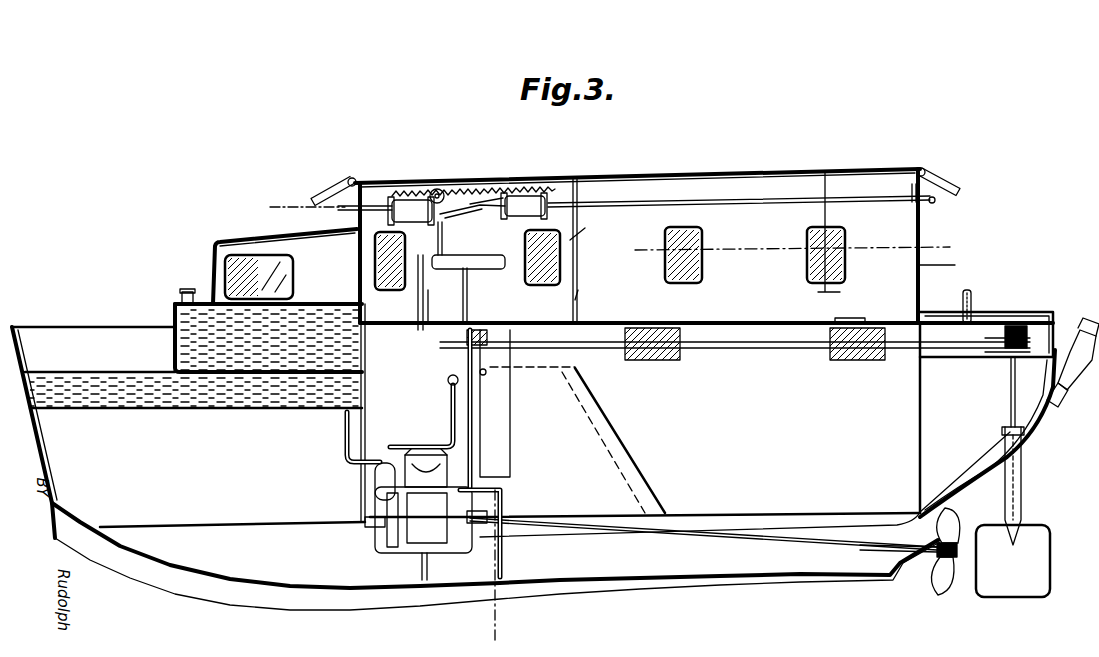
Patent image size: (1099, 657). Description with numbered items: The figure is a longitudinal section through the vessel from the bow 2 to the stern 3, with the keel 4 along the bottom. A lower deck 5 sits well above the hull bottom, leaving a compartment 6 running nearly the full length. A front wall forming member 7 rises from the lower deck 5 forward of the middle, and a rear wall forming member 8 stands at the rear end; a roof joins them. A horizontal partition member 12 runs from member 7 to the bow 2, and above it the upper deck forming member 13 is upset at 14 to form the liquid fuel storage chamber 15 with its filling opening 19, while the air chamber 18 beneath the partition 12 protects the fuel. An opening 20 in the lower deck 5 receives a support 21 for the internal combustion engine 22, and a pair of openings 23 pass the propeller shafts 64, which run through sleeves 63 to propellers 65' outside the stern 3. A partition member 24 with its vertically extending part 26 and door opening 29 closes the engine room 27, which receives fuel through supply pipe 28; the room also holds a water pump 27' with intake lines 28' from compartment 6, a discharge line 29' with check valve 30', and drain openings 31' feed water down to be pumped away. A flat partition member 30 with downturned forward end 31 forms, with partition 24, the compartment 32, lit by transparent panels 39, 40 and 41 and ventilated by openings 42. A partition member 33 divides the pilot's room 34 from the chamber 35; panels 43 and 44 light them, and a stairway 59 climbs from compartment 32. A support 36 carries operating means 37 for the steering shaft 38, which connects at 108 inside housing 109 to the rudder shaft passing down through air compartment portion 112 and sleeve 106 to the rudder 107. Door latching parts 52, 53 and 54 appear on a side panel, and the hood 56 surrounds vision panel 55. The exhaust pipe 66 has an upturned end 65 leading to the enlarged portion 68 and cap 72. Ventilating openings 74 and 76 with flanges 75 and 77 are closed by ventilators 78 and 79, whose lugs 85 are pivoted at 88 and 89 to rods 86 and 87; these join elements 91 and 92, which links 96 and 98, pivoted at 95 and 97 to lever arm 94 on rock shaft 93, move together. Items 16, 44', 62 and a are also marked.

The bow 2 is at (22, 335).
The stern 3 is at (1010, 395).
The keel 4 is at (284, 606).
The lower deck 5 is at (770, 513).
The compartment 6 is at (825, 172).
The front wall forming member 7 is at (345, 492).
The rear wall forming member 8 is at (932, 417).
The partition member 12 is at (242, 410).
The upper deck forming member 13 is at (960, 320).
The upset portion 14 is at (176, 305).
The liquid fuel storage chamber 15 is at (160, 398).
The bracket 16 is at (466, 337).
The air chamber 18 is at (189, 473).
The filling opening 19 is at (195, 292).
The opening 20 is at (368, 528).
The support 21 is at (424, 582).
The internal combustion engine 22 is at (500, 493).
The openings 23 is at (570, 512).
The partition member 24 is at (453, 408).
The vertically extending part 26 is at (444, 384).
The engine room 27 is at (422, 365).
The water pump 27' is at (357, 488).
The fuel supply pipe 28 is at (326, 432).
The water intake lines 28' is at (493, 563).
The door opening 29 is at (465, 422).
The water discharge line 29' is at (487, 408).
The partition member 30 is at (706, 308).
The check valve 30' is at (487, 390).
The downturned forward end 31 is at (487, 375).
The drain openings 31' is at (232, 538).
The compartment 32 is at (719, 395).
The partition member 33 is at (468, 226).
The pilot's room 34 is at (519, 225).
The chamber 35 is at (745, 176).
The support 36 is at (360, 300).
The operating means 37 is at (270, 278).
The steering shaft 38 is at (768, 348).
The transparent panel 39 is at (665, 360).
The transparent panel 40 is at (862, 358).
The transparent panel 41 is at (852, 318).
The openings 42 is at (900, 320).
The transparent panels 43 is at (396, 196).
The transparent panels 44 is at (770, 217).
The shelf 44' is at (947, 263).
The latching member 52 is at (445, 254).
The stop 53 is at (525, 270).
The clamping cap 54 is at (470, 268).
The transparent panel 55 is at (358, 248).
The hood 56 is at (238, 242).
The stairway 59 is at (612, 428).
The link 62 is at (580, 292).
The sleeves 63 is at (922, 565).
The propeller shafts 64 is at (845, 560).
The upturned rear end 65 is at (327, 174).
The propeller 65' is at (969, 484).
The exhaust pipe 66 is at (582, 540).
The enlarged upper portion 68 is at (1077, 345).
The cap 72 is at (1090, 320).
The ventilating opening 74 is at (351, 178).
The flange 75 is at (356, 180).
The ventilating opening 76 is at (910, 188).
The flange 77 is at (925, 172).
The ventilator 78 is at (320, 192).
The ventilator 79 is at (950, 182).
The lug 85 is at (936, 201).
The rod 86 is at (370, 200).
The rod 87 is at (636, 202).
The pivotal connection 88 is at (338, 209).
The pivotal connection 89 is at (934, 203).
The combined coupling and adjusting element 91 is at (405, 196).
The combined adjusting and coupling element 92 is at (576, 178).
The rock shaft 93 is at (470, 214).
The lever arm 94 is at (500, 195).
The pivotal connection 95 is at (475, 200).
The link 96 is at (440, 190).
The pivotal connection 97 is at (510, 196).
The link 98 is at (530, 195).
The sleeve 106 is at (1022, 470).
The rudder 107 is at (1030, 540).
The operative connection 108 is at (1018, 326).
The housing 109 is at (993, 336).
The rear air compartment portion 112 is at (986, 349).
The section line a is at (496, 573).